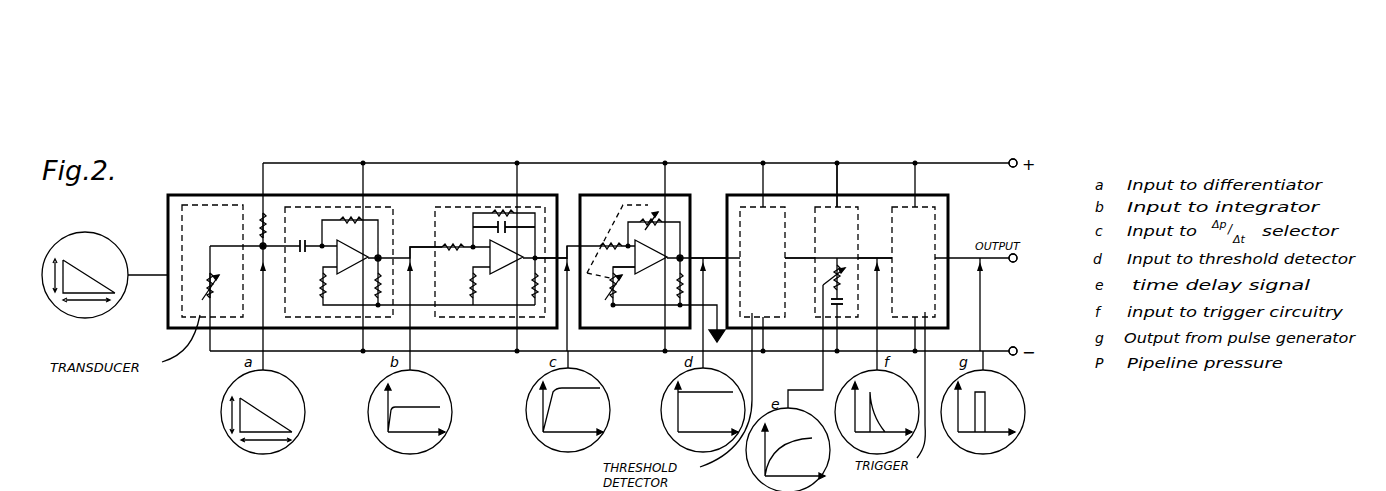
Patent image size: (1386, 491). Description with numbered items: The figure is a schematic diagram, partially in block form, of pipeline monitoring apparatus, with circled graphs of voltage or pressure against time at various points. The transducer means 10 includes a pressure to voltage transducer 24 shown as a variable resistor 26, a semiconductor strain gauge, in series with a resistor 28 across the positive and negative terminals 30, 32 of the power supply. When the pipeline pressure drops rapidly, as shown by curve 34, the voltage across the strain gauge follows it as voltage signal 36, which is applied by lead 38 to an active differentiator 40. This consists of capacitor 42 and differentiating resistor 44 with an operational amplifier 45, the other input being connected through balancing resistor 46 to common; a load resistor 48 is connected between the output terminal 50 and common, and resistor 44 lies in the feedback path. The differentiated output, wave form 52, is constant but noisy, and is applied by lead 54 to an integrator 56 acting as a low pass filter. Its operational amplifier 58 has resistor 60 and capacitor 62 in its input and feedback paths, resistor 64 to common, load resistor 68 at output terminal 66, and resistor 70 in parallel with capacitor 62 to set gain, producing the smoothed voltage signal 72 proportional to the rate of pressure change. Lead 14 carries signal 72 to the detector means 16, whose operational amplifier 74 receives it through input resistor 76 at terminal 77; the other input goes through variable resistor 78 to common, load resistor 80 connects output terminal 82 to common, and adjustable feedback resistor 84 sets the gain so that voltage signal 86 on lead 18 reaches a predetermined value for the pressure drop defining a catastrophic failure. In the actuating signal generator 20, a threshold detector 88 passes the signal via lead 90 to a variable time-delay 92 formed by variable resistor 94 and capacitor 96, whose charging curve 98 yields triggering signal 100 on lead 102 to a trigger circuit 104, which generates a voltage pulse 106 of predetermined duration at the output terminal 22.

The transducer means 10 is at (193, 195).
The lead 14 is at (582, 245).
The detector means 16 is at (628, 195).
The lead 18 is at (698, 260).
The actuating signal generator 20 is at (933, 195).
The output terminal 22 is at (1016, 262).
The pressure to voltage transducer 24 is at (195, 320).
The variable resistor 26 is at (205, 283).
The resistor 28 is at (263, 213).
The positive terminal 30 is at (1012, 167).
The negative terminal 32 is at (1013, 347).
The pressure curve 34 is at (75, 262).
The voltage signal 36 is at (264, 404).
The lead 38 is at (272, 248).
The active differentiator 40 is at (325, 207).
The capacitor 42 is at (304, 256).
The differentiating resistor 44 is at (340, 220).
The operational amplifier 45 is at (352, 250).
The balancing resistor 46 is at (323, 290).
The load resistor 48 is at (377, 288).
The output terminal 50 is at (381, 256).
The wave form 52 is at (432, 394).
The lead 54 is at (436, 247).
The integrator 56 is at (438, 317).
The operational amplifier 58 is at (507, 267).
The resistor 60 is at (455, 244).
The capacitor 62 is at (508, 229).
The resistor 64 is at (473, 282).
The output terminal 66 is at (540, 252).
The load resistor 68 is at (535, 300).
The resistor 70 is at (500, 210).
The voltage signal 72 is at (560, 389).
The operational amplifier 74 is at (655, 272).
The input resistor 76 is at (608, 246).
The terminal 77 is at (633, 250).
The variable resistor 78 is at (615, 287).
The load resistor 80 is at (676, 298).
The output terminal 82 is at (682, 256).
The feedback resistor 84 is at (655, 218).
The voltage signal 86 is at (692, 392).
The threshold detector 88 is at (786, 232).
The lead 90 is at (804, 260).
The variable time-delay 92 is at (866, 220).
The variable resistor 94 is at (838, 266).
The capacitor 96 is at (845, 315).
The charging curve 98 is at (786, 444).
The triggering signal 100 is at (878, 406).
The lead 102 is at (873, 256).
The trigger circuit 104 is at (936, 226).
The voltage pulse 106 is at (986, 406).